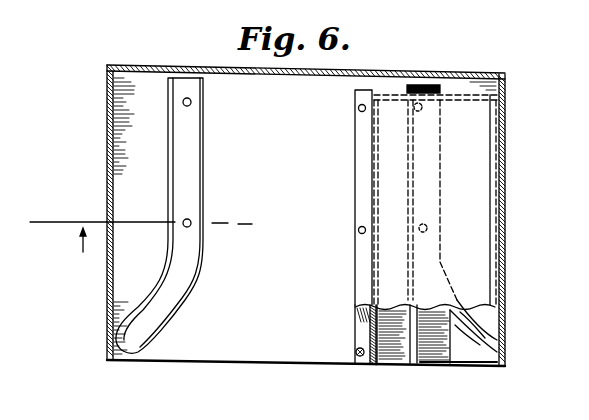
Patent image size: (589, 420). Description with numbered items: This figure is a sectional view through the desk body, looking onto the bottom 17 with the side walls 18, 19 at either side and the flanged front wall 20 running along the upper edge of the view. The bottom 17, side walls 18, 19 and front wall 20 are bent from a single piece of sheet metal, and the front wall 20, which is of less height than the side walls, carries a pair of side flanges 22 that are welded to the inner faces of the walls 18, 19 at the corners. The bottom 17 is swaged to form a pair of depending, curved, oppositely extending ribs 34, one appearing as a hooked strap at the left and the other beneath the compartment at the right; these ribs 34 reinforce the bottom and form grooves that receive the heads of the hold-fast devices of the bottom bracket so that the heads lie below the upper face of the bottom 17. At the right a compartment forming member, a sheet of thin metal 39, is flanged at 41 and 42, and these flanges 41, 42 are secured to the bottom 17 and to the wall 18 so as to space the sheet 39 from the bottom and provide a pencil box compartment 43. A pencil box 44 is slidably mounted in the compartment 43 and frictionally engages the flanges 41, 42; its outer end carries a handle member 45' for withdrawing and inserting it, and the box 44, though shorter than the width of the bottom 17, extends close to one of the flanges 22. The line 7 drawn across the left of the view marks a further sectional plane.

The section line 7- 7 is at (141, 234).
The bottom 17 is at (260, 356).
The side wall 18 is at (505, 185).
The side wall 19 is at (107, 160).
The flanged front wall 20 is at (326, 76).
The side flanges 22 is at (126, 82).
The ribs 34 is at (203, 175).
The sheet of thin metal 39 is at (478, 160).
The flange 41 is at (370, 332).
The flange 42 is at (483, 345).
The pencil box compartment 43 is at (397, 312).
The pencil box 44 is at (483, 323).
The handle member 45' is at (458, 383).